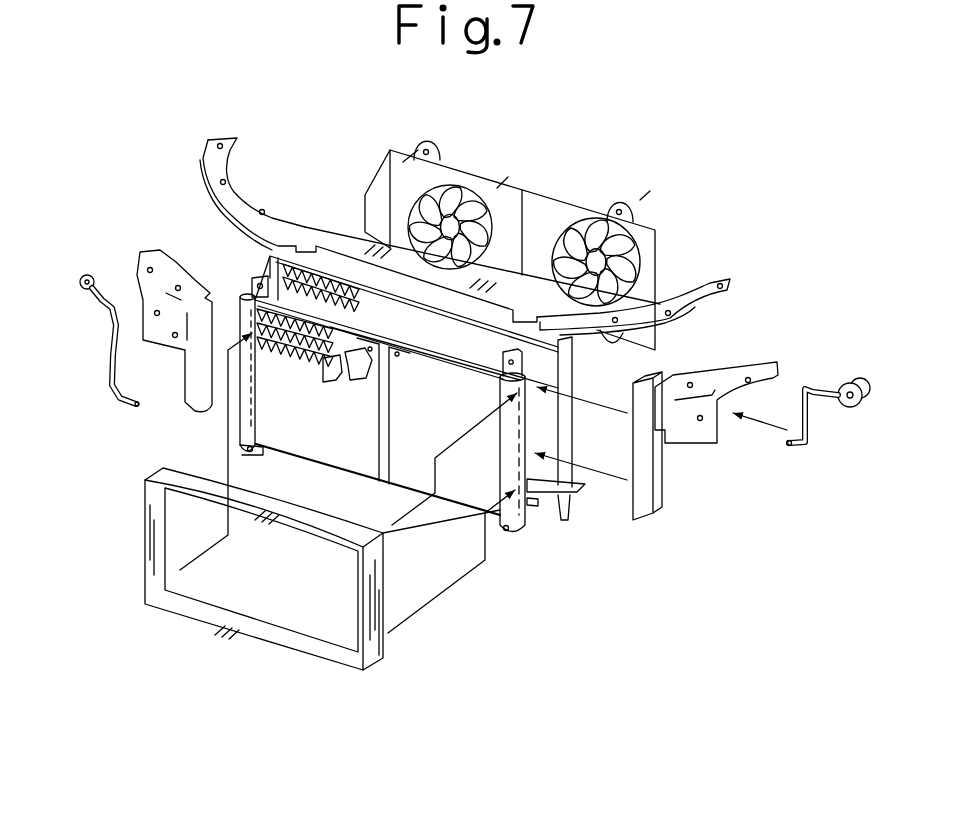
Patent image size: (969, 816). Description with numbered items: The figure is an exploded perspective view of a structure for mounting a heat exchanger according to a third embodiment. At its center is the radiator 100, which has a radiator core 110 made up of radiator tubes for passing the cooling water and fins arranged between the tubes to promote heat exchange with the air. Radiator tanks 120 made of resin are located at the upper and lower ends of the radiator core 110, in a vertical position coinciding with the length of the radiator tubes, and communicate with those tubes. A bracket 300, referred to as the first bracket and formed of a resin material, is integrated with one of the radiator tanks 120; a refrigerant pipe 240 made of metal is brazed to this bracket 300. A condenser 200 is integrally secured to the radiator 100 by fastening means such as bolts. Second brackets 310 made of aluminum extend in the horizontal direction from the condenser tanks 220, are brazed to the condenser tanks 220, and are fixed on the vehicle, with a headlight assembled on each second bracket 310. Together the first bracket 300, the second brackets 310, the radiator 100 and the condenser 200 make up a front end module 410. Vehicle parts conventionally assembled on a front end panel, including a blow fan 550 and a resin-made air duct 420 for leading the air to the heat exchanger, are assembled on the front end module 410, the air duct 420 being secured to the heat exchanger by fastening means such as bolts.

The radiator 100 is at (263, 264).
The radiator core 110 is at (360, 303).
The radiator tanks 120 is at (486, 300).
The condenser 200 is at (217, 420).
The condenser tanks 220 is at (520, 528).
The refrigerant pipe 240 is at (85, 276).
The bracket 300 is at (245, 190).
The second brackets 310 is at (160, 252).
The front end module 410 is at (668, 528).
The air duct 420 is at (370, 657).
The blow fan 550 is at (533, 203).